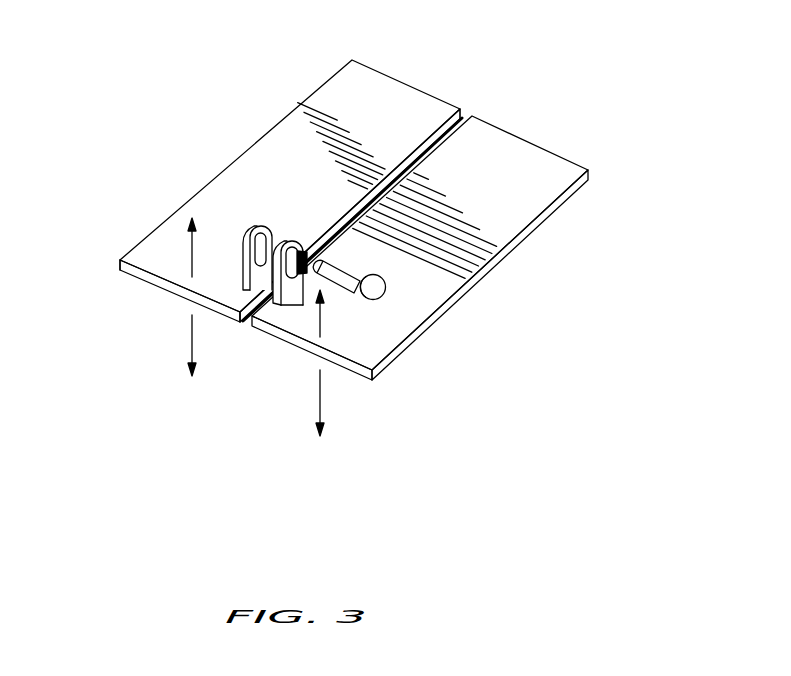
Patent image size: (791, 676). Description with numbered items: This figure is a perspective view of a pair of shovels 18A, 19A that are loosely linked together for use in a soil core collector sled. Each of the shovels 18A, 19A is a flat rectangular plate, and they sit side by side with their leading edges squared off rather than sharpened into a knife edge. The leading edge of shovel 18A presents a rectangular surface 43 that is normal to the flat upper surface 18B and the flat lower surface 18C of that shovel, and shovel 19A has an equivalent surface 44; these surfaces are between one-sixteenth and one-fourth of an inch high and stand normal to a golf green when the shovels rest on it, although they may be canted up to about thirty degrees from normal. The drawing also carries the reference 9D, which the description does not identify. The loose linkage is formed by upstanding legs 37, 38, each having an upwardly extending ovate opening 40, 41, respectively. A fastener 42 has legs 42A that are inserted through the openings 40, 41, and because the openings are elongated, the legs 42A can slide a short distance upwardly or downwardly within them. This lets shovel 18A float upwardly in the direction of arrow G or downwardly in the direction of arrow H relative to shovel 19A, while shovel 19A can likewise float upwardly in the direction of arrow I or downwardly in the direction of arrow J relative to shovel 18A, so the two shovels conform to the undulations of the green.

The shovel 18A is at (313, 215).
The flat upper surface 18B is at (250, 188).
The flat lower surface 18C is at (121, 262).
The textured top surface of first plate 9D is at (424, 94).
The shovel 19A is at (420, 242).
The upstanding leg 37 is at (247, 241).
The upstanding leg 38 is at (267, 287).
The ovate opening 40 is at (243, 257).
The ovate opening 41 is at (297, 301).
The fastener 42 is at (368, 273).
The legs of fastener 42A is at (345, 272).
The rectangular surface 43 is at (155, 280).
The surface 44 is at (366, 377).
The arrow G is at (189, 258).
The arrow H is at (190, 335).
The arrow I is at (321, 318).
The arrow J is at (318, 385).